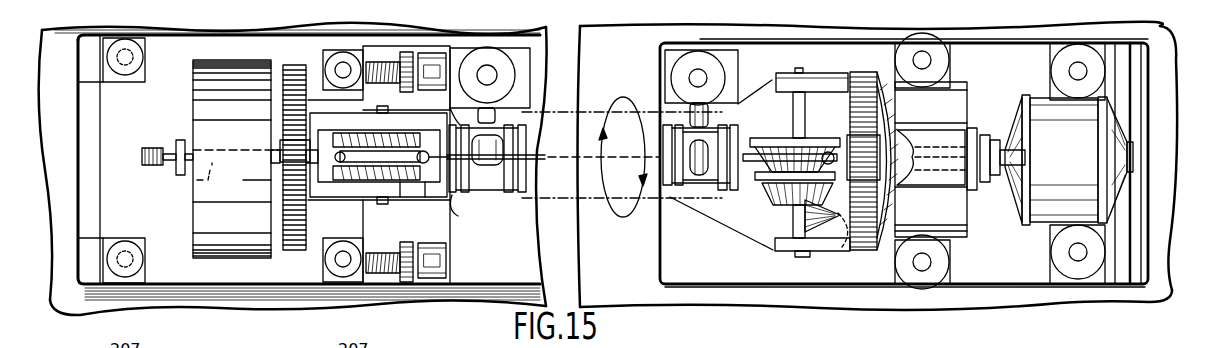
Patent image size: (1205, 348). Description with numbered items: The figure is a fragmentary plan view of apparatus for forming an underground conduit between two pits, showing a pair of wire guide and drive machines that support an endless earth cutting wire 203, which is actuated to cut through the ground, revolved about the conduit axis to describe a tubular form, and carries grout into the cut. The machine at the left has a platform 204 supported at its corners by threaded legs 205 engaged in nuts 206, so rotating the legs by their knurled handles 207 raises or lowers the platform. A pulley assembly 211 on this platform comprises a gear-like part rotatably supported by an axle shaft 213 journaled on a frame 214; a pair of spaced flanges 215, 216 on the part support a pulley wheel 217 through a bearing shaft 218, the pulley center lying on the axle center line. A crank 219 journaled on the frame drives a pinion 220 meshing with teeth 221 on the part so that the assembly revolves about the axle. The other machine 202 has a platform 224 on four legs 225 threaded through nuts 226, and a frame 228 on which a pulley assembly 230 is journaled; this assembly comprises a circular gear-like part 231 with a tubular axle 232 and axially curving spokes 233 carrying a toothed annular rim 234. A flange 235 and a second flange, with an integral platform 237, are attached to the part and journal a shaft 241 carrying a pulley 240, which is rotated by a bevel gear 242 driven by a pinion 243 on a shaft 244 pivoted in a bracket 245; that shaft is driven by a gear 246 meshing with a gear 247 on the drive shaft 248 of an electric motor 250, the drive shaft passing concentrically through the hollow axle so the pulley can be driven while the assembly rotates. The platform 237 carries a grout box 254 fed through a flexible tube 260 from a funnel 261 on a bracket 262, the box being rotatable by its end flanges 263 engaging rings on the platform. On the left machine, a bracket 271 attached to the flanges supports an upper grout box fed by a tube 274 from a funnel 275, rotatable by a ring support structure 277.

The wire guide and drive machine 202 is at (712, 288).
The endless earth cutting wire 203 is at (622, 155).
The platform 204 is at (167, 198).
The threaded legs 205 is at (130, 58).
The nuts 206 is at (145, 81).
The knurled handles 207 is at (114, 70).
The pulley assembly 211 is at (308, 121).
The axle shaft 213 is at (234, 177).
The frame 214 is at (205, 217).
The flange 215 is at (366, 108).
The flange 216 is at (412, 198).
The pulley wheel 217 is at (397, 137).
The bearing shaft 218 is at (372, 204).
The crank 219 is at (140, 148).
The pinion 220 is at (280, 151).
The teeth 221 is at (307, 210).
The platform 224 is at (983, 255).
The legs 225 is at (1000, 161).
The nuts 226 is at (1055, 88).
The frame 228 is at (969, 223).
The pulley assembly 230 is at (805, 257).
The circular gear like part 231 is at (880, 250).
The tubular axle 232 is at (914, 136).
The spokes 233 is at (892, 98).
The toothed annular rim 234 is at (856, 109).
The flange 235 is at (758, 84).
The platform 237 is at (724, 221).
The pulley 240 is at (780, 131).
The shaft 241 is at (793, 73).
The bevel gear 242 is at (768, 201).
The pinion 243 is at (800, 231).
The shaft 244 is at (850, 250).
The bracket 245 is at (803, 214).
The gear 246 is at (896, 219).
The gear 247 is at (858, 136).
The drive shaft 248 is at (914, 163).
The electric motor 250 is at (1080, 163).
The grout box 254 is at (668, 196).
The flexible tube 260 is at (709, 113).
The funnel 261 is at (722, 93).
The bracket 262 is at (738, 56).
The end flanges 263 is at (665, 150).
The bracket 271 is at (452, 200).
The tube 274 is at (459, 111).
The funnel 275 is at (490, 85).
The ring support structure 277 is at (468, 195).